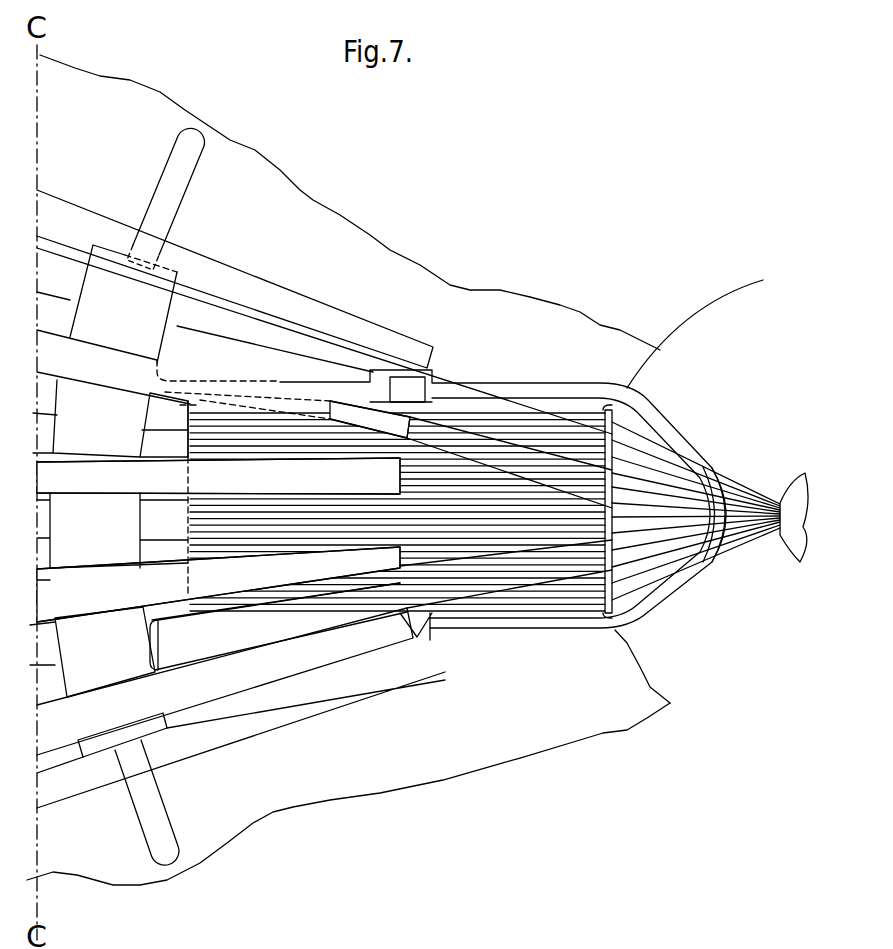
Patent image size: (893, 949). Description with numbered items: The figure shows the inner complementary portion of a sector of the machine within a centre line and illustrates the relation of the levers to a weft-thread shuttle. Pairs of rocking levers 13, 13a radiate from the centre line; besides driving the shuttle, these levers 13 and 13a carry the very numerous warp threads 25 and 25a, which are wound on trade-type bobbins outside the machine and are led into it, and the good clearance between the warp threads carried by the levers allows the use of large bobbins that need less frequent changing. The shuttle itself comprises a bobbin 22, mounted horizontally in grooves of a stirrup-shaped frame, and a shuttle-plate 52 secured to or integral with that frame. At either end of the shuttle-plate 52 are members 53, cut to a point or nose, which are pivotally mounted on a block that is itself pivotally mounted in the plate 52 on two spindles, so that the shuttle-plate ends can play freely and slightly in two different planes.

The rocking lever 13 is at (198, 725).
The rocking lever 13a is at (297, 350).
The bobbin 22 is at (503, 503).
The warp thread 25 is at (663, 560).
The warp thread 25a is at (638, 583).
The shuttle-plate 52 is at (112, 536).
The shuttle-plate end member 53 is at (173, 195).